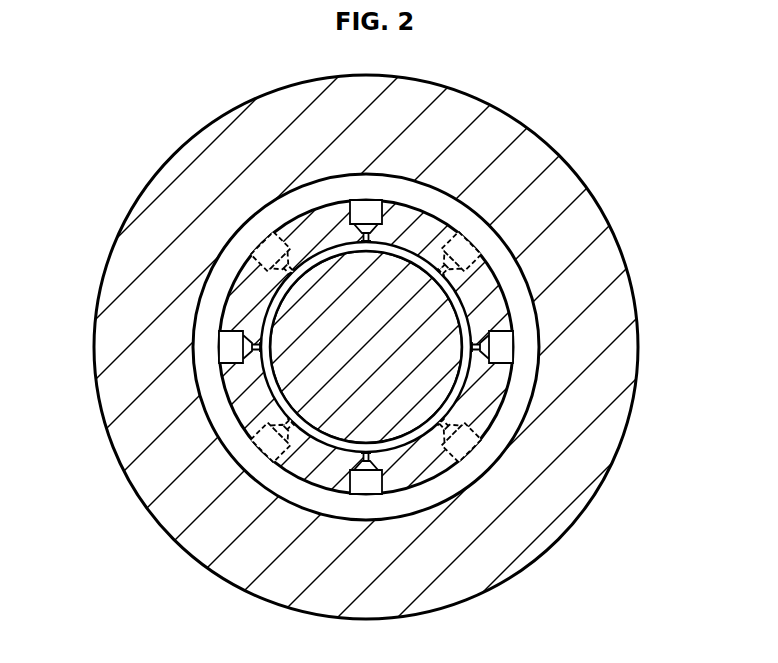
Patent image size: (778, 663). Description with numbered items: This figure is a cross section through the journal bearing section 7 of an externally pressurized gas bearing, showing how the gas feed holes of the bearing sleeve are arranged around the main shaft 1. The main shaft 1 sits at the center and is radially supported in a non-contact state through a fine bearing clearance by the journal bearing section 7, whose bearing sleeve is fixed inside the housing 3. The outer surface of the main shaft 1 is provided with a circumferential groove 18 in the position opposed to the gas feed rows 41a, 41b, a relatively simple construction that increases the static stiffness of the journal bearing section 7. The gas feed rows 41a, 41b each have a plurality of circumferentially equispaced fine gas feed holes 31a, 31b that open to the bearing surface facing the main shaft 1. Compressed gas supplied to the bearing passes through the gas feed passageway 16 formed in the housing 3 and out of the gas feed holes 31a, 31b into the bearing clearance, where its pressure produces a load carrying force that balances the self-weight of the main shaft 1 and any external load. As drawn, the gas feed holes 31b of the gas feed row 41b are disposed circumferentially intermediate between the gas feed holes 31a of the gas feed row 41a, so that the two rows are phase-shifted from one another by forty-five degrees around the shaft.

The main shaft 1 is at (292, 503).
The housing 3 is at (495, 125).
The journal bearing section 7 is at (462, 296).
The gas feed passageway 16 is at (203, 323).
The circumferential groove 18 is at (463, 392).
The gas feed hole 31a is at (358, 240).
The gas feed hole 31b is at (268, 280).
The gas feed row 41a is at (527, 352).
The gas feed row 41b is at (460, 248).